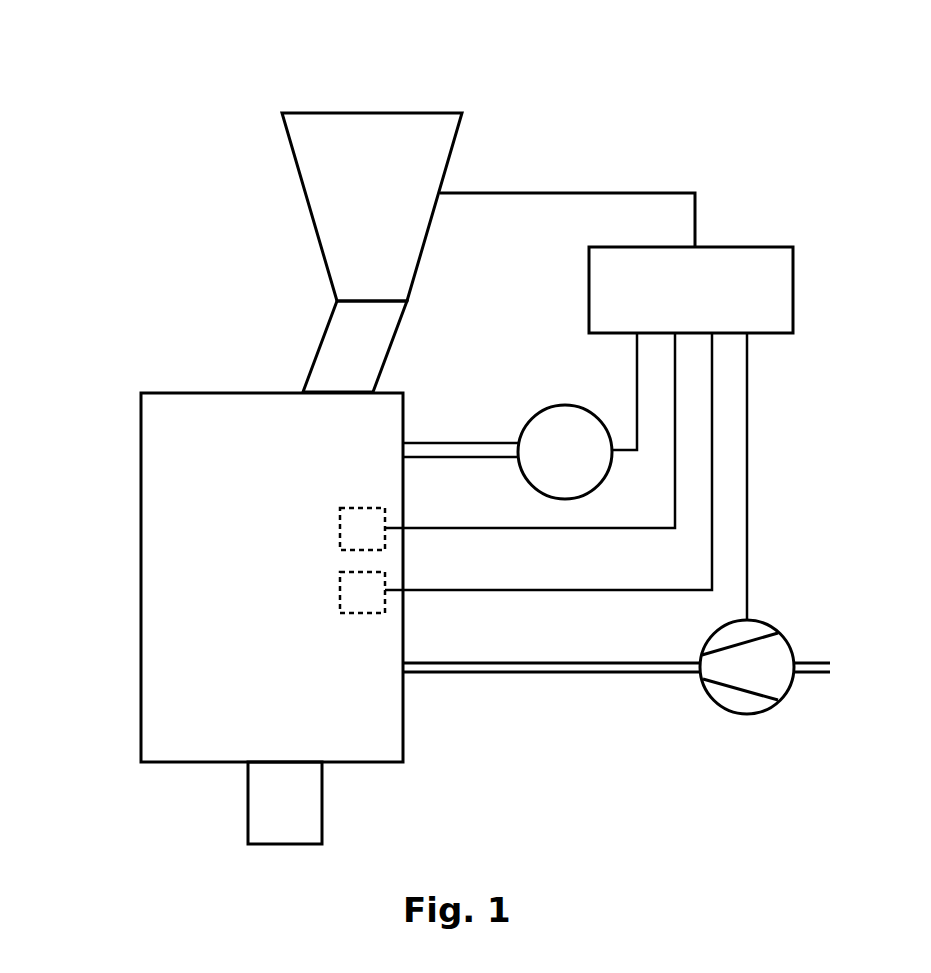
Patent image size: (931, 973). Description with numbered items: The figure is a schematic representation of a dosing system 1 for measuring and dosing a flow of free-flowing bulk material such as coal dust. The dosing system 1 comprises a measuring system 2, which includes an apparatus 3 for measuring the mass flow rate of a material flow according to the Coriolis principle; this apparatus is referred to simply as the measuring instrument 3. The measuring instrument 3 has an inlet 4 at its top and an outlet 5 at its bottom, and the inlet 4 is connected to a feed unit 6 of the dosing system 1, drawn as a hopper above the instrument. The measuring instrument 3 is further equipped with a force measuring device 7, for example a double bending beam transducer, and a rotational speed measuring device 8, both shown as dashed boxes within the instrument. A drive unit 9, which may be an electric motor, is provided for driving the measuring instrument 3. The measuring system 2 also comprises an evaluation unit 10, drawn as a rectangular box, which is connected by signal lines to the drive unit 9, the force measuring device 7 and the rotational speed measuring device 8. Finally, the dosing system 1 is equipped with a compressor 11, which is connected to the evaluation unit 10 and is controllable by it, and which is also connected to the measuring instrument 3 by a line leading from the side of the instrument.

The dosing system 1 is at (127, 97).
The measuring system 2 is at (497, 763).
The apparatus for measuring a mass flow rate 3 is at (132, 390).
The inlet 4 is at (322, 338).
The outlet 5 is at (248, 811).
The feed unit 6 is at (300, 173).
The force measuring device 7 is at (340, 532).
The rotational speed measuring device 8 is at (340, 593).
The drive unit 9 is at (530, 418).
The evaluation unit 10 is at (755, 246).
The compressor 11 is at (742, 713).